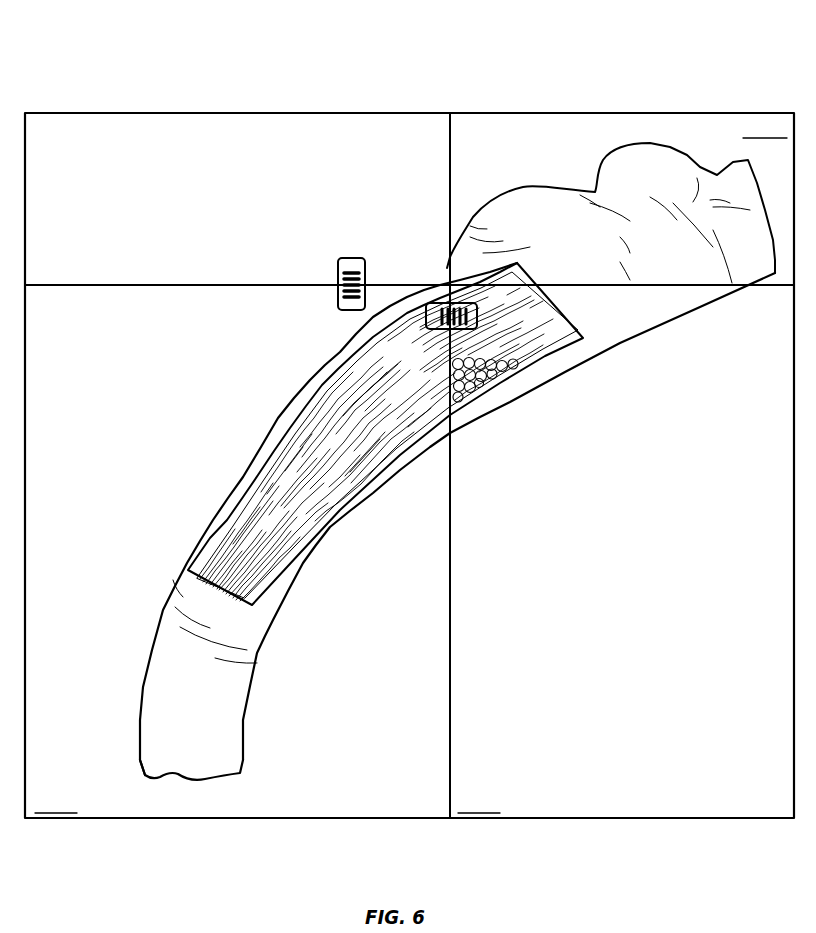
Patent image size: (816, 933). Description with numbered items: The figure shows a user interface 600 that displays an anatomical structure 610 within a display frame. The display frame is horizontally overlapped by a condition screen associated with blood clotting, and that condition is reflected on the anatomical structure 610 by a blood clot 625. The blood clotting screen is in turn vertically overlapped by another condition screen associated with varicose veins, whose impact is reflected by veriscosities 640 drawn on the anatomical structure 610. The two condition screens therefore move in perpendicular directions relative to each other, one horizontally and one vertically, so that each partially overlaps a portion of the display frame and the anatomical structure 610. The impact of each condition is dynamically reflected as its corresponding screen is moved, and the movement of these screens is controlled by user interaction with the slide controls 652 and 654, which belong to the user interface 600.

The user interface 600 is at (178, 75).
The anatomical structure 610 is at (167, 543).
The veriscosities 640 is at (627, 162).
The slide control 654 is at (352, 264).
The slide control 652 is at (477, 316).
The blood clot 625 is at (487, 395).